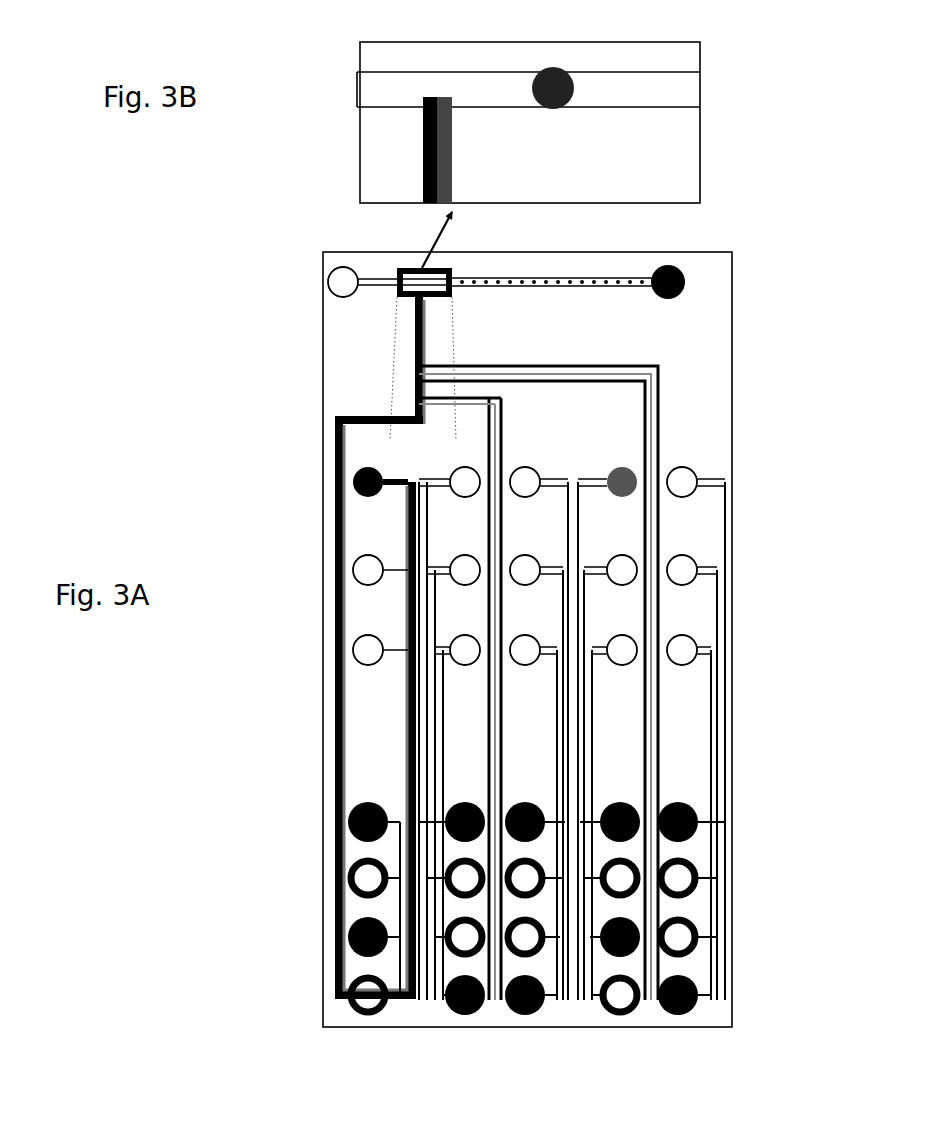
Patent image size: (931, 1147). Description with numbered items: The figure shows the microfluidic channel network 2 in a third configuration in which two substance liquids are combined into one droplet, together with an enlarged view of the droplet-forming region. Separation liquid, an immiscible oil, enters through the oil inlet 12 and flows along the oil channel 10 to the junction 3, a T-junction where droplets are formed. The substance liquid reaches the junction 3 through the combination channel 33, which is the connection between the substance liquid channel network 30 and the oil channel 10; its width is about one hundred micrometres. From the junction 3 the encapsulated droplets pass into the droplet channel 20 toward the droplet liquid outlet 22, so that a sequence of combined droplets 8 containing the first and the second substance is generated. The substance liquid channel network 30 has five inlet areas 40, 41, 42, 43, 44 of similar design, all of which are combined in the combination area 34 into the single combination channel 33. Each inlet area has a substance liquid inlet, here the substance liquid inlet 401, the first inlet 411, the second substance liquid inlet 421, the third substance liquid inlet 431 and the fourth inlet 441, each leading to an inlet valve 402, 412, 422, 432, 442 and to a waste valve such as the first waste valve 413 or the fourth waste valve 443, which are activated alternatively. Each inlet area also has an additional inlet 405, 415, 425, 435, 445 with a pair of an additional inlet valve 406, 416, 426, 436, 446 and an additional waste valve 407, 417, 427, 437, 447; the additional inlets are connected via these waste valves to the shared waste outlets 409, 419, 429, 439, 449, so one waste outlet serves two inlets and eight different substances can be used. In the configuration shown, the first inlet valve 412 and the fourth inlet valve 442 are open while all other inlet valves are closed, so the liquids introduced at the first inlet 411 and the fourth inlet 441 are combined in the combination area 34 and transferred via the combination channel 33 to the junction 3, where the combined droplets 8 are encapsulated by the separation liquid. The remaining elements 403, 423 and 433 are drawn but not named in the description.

In FIG. 3A, the microfluidic channel network 2 is at (772, 308).
In FIG. 3B, the junction 3 is at (440, 96).
In FIG. 3A, the junction 3 is at (418, 268).
In FIG. 3B, the combined droplets 8 is at (553, 67).
In FIG. 3A, the combined droplets 8 is at (551, 277).
In FIG. 3B, the oil channel 10 is at (443, 89).
In FIG. 3A, the oil channel 10 is at (378, 278).
In FIG. 3A, the oil inlet 12 is at (334, 271).
In FIG. 3B, the droplet channel 20 is at (615, 89).
In FIG. 3A, the droplet liquid outlet 22 is at (669, 265).
In FIG. 3A, the substance liquid channel network 30 is at (586, 344).
In FIG. 3B, the combination channel 33 is at (453, 155).
In FIG. 3A, the combination channel 33 is at (426, 298).
In FIG. 3A, the combination area 34 is at (385, 352).
In FIG. 3A, the inlet area 40 is at (672, 1050).
In FIG. 3A, the first inlet area 41 is at (607, 1050).
In FIG. 3A, the second inlet area 42 is at (517, 1050).
In FIG. 3A, the third inlet area 43 is at (450, 1050).
In FIG. 3A, the fourth inlet area 44 is at (349, 1050).
In FIG. 3A, the substance liquid inlet 401 is at (690, 468).
In FIG. 3A, the waste outlet 409 is at (686, 586).
In FIG. 3A, the additional inlet 405 is at (686, 666).
In FIG. 3A, the additional inlet valve 406 is at (682, 803).
In FIG. 3A, the additional waste valve 407 is at (700, 878).
In FIG. 3A, the outlet well 403 is at (700, 937).
In FIG. 3A, the inlet valve 402 is at (684, 1016).
In FIG. 3A, the first inlet 411 is at (617, 468).
In FIG. 3A, the first waste outlet 419 is at (620, 586).
In FIG. 3A, the first additional inlet 415 is at (621, 666).
In FIG. 3A, the additional first inlet valve 416 is at (620, 803).
In FIG. 3A, the additional first waste valve 417 is at (640, 868).
In FIG. 3A, the first waste valve 413 is at (640, 930).
In FIG. 3A, the first inlet valve 412 is at (625, 1016).
In FIG. 3A, the second substance liquid inlet 421 is at (532, 468).
In FIG. 3A, the waste outlet 429 is at (528, 586).
In FIG. 3A, the additional inlet 425 is at (528, 666).
In FIG. 3A, the additional inlet valve 426 is at (527, 803).
In FIG. 3A, the additional waste valve 427 is at (525, 878).
In FIG. 3A, the outlet well 423 is at (525, 937).
In FIG. 3A, the inlet valve 422 is at (531, 1016).
In FIG. 3A, the third substance liquid inlet 431 is at (462, 467).
In FIG. 3A, the waste outlet 439 is at (465, 586).
In FIG. 3A, the additional inlet 435 is at (465, 666).
In FIG. 3A, the additional inlet valve 436 is at (465, 803).
In FIG. 3A, the additional waste valve 437 is at (465, 878).
In FIG. 3A, the outlet well 433 is at (465, 937).
In FIG. 3A, the inlet valve 432 is at (468, 1016).
In FIG. 3A, the fourth inlet 441 is at (352, 480).
In FIG. 3A, the fourth waste outlet 449 is at (352, 570).
In FIG. 3A, the additional inlet 445 is at (352, 650).
In FIG. 3A, the additional inlet valve 446 is at (346, 820).
In FIG. 3A, the additional waste valve 447 is at (346, 878).
In FIG. 3A, the fourth waste valve 443 is at (346, 937).
In FIG. 3A, the fourth inlet valve 442 is at (372, 1016).